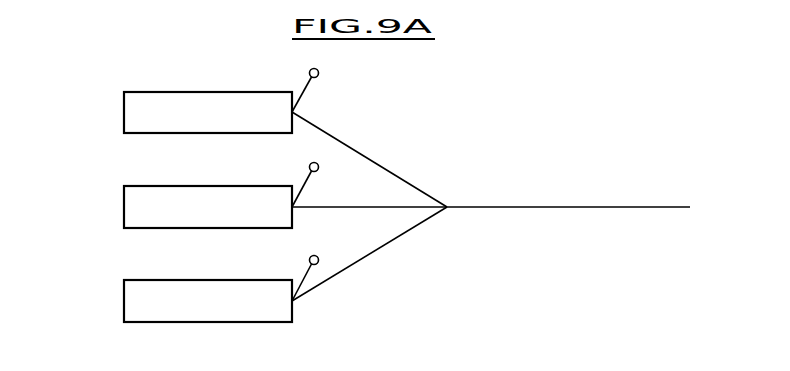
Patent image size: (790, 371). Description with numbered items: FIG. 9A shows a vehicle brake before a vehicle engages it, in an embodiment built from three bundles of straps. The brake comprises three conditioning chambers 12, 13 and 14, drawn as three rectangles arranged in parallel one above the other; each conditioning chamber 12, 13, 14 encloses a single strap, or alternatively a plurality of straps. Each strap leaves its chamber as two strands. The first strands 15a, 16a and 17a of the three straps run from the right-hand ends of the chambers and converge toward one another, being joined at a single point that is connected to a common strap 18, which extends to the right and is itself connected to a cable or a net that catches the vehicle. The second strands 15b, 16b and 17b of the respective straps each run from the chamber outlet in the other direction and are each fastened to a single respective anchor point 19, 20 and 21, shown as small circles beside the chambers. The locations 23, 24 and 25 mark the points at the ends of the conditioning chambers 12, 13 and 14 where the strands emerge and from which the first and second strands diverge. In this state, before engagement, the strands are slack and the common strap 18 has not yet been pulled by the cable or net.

The conditioning chamber 12 is at (121, 112).
The conditioning chamber 13 is at (121, 206).
The conditioning chamber 14 is at (121, 300).
The first strand 15a is at (371, 158).
The second strand 15b is at (304, 87).
The first strand 16a is at (379, 203).
The second strand 16b is at (303, 183).
The first strand 17a is at (374, 257).
The second strand 17b is at (302, 277).
The common strap 18 is at (584, 205).
The anchor point 19 is at (319, 70).
The anchor point 20 is at (310, 163).
The anchor point 21 is at (310, 256).
The first output point 23 is at (297, 111).
The second output point 24 is at (297, 209).
The third output point 25 is at (297, 303).